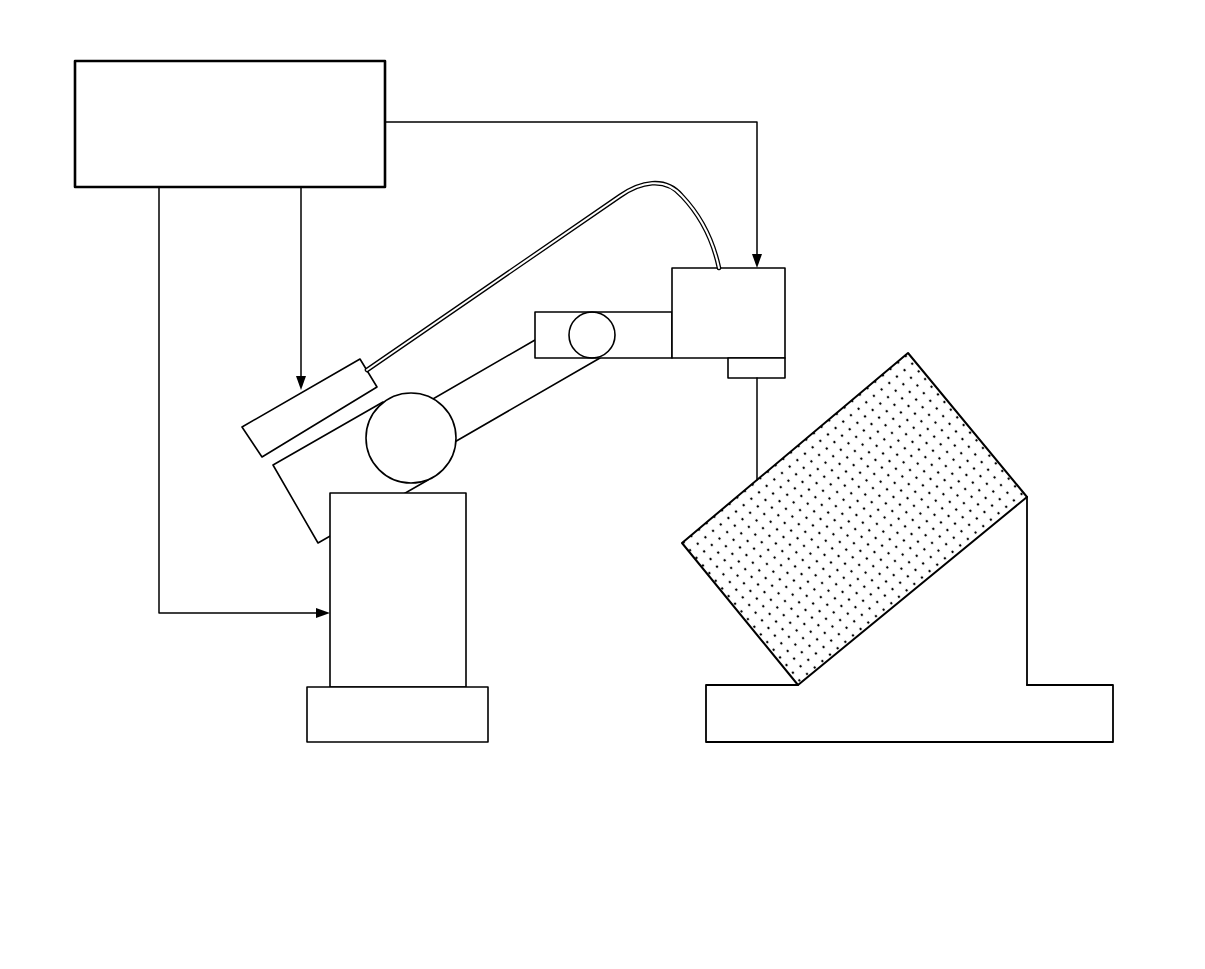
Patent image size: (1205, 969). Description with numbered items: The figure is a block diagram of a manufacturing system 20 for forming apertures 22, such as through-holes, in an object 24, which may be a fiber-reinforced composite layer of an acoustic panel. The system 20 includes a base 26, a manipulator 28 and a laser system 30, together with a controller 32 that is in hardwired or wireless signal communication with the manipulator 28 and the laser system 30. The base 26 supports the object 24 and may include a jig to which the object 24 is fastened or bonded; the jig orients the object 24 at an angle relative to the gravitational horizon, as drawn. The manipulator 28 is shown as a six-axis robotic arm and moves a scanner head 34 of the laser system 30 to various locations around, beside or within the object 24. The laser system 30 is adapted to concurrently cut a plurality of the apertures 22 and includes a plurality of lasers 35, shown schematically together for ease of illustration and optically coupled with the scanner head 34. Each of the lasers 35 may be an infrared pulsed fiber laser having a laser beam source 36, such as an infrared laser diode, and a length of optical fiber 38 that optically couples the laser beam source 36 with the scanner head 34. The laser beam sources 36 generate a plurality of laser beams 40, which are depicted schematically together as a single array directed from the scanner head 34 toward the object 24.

The manufacturing system 20 is at (977, 152).
The apertures 22 is at (947, 433).
The object 24 is at (1007, 462).
The base 26 is at (905, 745).
The manipulator 28 is at (553, 445).
The laser system 30 is at (472, 473).
The controller 32 is at (385, 77).
The scanner head 34 is at (785, 300).
The lasers 35 is at (434, 293).
The laser beam source 36 is at (265, 405).
The optical fiber 38 is at (550, 228).
The laser beams 40 is at (757, 438).